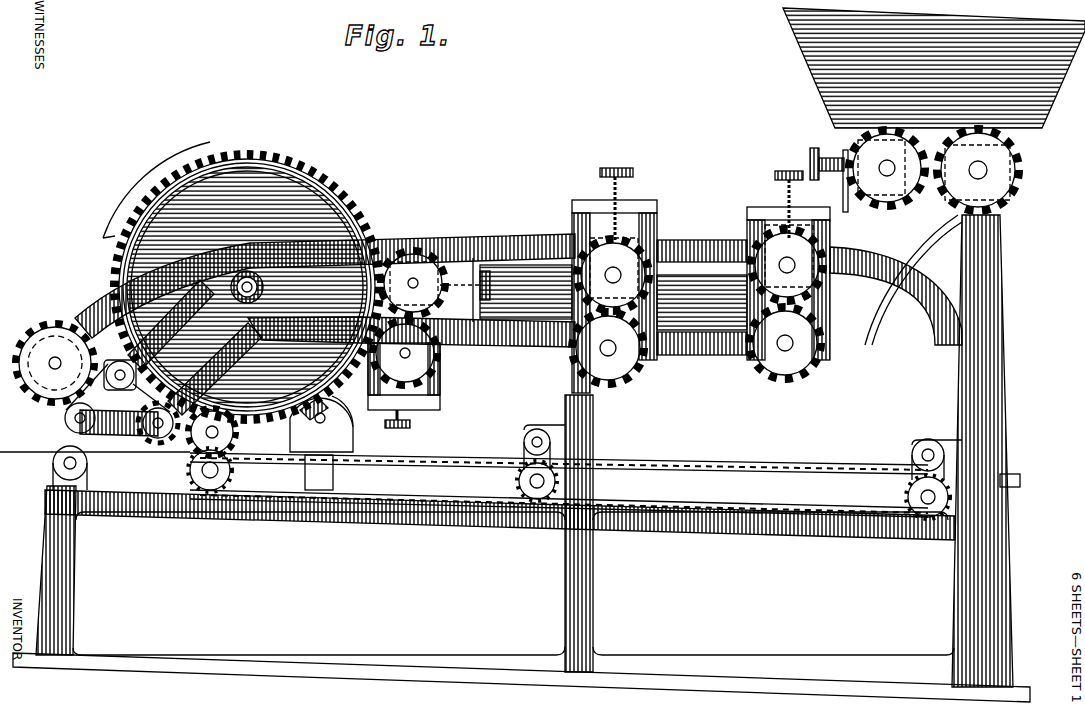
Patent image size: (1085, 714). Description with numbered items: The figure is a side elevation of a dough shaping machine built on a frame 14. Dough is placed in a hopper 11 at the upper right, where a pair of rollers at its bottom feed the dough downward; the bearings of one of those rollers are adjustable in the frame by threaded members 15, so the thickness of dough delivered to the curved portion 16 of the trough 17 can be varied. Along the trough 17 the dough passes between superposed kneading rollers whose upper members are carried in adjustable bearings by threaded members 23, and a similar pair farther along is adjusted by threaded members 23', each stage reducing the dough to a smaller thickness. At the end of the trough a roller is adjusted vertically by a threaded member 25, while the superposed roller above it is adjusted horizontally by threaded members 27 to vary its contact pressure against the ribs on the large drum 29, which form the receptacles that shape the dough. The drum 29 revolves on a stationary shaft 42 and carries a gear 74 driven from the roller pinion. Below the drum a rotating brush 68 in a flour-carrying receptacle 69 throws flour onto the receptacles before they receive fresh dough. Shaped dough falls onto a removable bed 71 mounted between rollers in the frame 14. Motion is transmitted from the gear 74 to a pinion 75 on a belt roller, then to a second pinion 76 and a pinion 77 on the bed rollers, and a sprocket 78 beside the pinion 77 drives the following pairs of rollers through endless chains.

The hopper 11 is at (826, 68).
The frame 14 is at (467, 246).
The threaded members 15 is at (828, 170).
The curved portion 16 is at (940, 251).
The trough 17 is at (700, 310).
The threaded members 23 is at (788, 263).
The threaded members 23' is at (614, 273).
The threaded member 25 is at (412, 427).
The threaded members 27 is at (491, 281).
The drum 29 is at (290, 181).
The stationary shaft 42 is at (252, 285).
The rotating brush 68 is at (309, 412).
The flour-carrying receptacle 69 is at (341, 426).
The removable bed 71 is at (95, 468).
The gear 74 is at (330, 197).
The pinion 75 is at (160, 446).
The second pinion 76 is at (240, 434).
The pinion 77 is at (192, 457).
The sprocket 78 is at (222, 478).